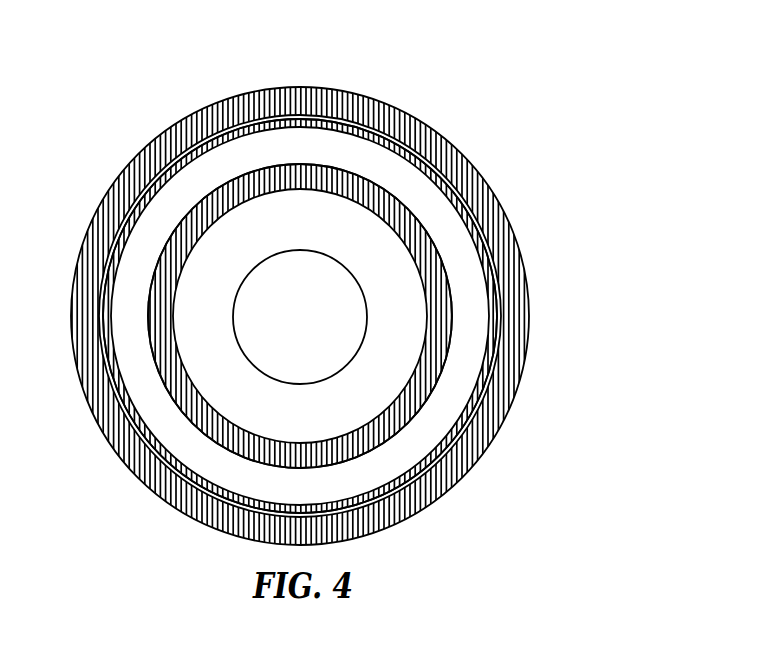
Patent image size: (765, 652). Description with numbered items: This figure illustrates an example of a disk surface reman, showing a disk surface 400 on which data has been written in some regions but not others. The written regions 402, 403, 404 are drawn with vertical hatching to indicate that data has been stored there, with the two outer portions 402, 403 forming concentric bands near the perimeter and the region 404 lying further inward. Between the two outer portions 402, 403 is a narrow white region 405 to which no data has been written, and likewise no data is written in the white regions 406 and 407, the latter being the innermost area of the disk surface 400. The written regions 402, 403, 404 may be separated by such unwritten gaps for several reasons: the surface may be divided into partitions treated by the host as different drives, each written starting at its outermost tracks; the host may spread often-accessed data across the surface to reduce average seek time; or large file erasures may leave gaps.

The disk surface 400 is at (598, 142).
The written region 402 is at (102, 207).
The written region 403 is at (167, 170).
The written region 404 is at (208, 210).
The white region 405 is at (308, 117).
The white region 406 is at (278, 158).
The white region 407 is at (278, 234).